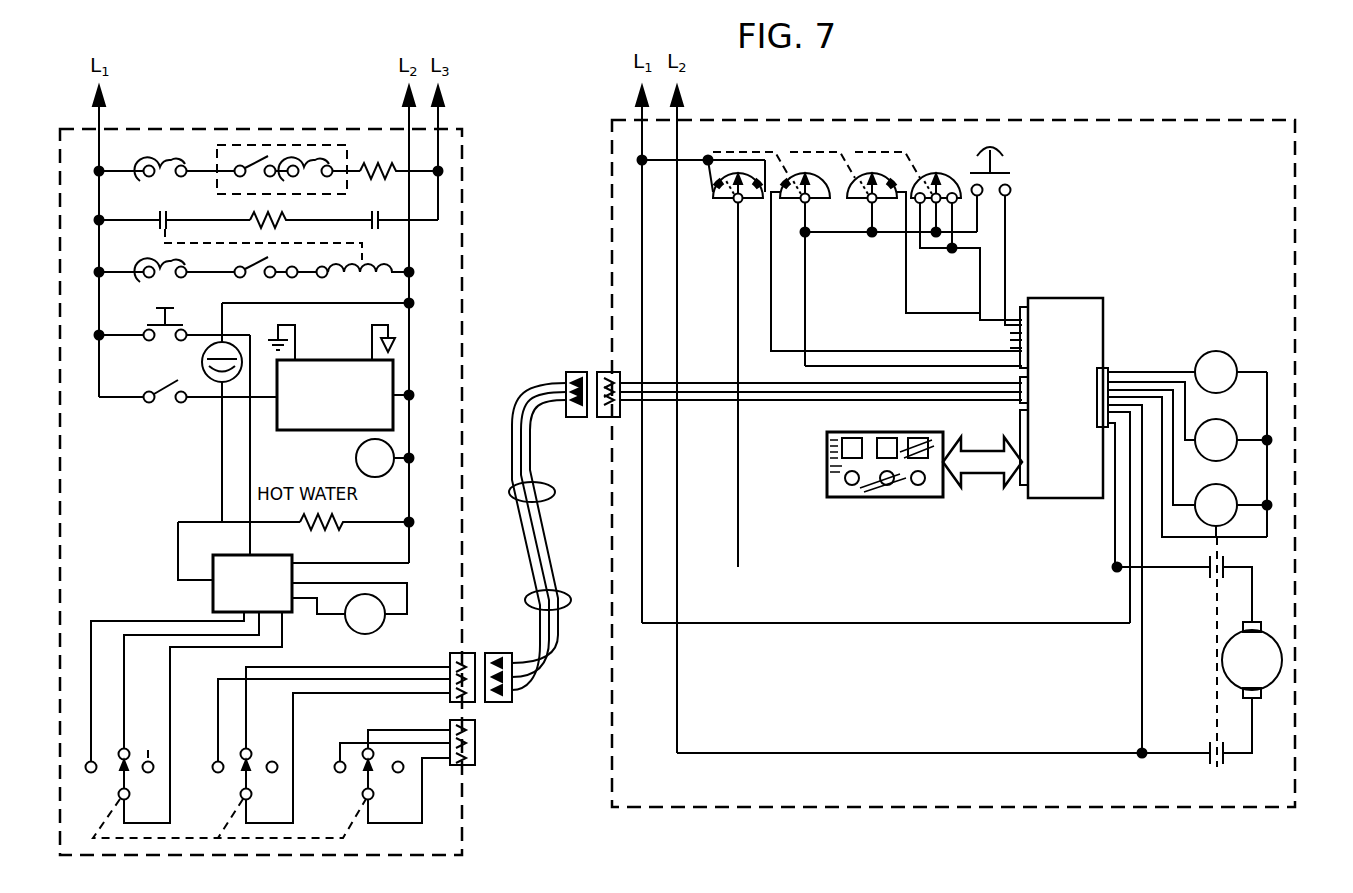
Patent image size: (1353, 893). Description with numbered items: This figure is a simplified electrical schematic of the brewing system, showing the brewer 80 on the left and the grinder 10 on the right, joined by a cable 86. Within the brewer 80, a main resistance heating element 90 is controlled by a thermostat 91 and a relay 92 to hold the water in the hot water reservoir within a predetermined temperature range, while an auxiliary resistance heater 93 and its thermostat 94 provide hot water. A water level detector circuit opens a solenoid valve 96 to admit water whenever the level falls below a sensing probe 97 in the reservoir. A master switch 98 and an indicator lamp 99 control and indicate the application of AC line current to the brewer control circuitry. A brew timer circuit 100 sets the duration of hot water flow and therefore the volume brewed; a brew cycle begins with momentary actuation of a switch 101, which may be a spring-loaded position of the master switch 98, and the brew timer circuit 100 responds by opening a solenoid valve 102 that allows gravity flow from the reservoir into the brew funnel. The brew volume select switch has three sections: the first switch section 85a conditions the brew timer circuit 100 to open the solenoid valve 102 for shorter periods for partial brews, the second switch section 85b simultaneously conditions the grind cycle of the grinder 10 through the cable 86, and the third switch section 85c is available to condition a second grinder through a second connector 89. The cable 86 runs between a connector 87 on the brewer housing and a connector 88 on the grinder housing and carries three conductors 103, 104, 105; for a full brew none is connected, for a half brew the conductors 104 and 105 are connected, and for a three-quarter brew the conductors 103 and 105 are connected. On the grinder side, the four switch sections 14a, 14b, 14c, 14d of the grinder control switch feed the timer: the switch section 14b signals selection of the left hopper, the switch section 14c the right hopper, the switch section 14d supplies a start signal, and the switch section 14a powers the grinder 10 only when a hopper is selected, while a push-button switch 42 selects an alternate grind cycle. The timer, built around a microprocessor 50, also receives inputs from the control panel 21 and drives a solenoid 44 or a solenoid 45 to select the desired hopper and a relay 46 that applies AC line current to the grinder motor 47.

The grinder 10 is at (1126, 120).
The switch section 14a is at (730, 204).
The switch section 14b is at (812, 178).
The switch section 14c is at (868, 204).
The switch section 14d is at (940, 180).
The control panel 21 is at (828, 480).
The push-button switch 42 is at (1006, 172).
The solenoid 44 is at (1216, 351).
The solenoid 45 is at (1232, 424).
The relay 46 is at (1232, 490).
The grinder motor 47 is at (1270, 632).
The microprocessor 50 is at (1060, 298).
The brewer 80 is at (462, 170).
The first switch section 85a is at (118, 780).
The second switch section 85b is at (240, 778).
The third switch section 85c is at (362, 778).
The cable 86 is at (526, 536).
The connector 87 is at (474, 653).
The connector 88 is at (606, 372).
The second connector 89 is at (476, 770).
The main resistance heating element 90 is at (287, 224).
The thermostat 91 is at (160, 264).
The relay 92 is at (372, 266).
The auxiliary resistance heater 93 is at (392, 146).
The thermostat 94 is at (165, 166).
The solenoid valve 96 is at (388, 472).
The sensing probe 97 is at (395, 350).
The master switch 98 is at (172, 392).
The indicator lamp 99 is at (201, 362).
The brew timer circuit 100 is at (292, 563).
The switch 101 is at (152, 324).
The solenoid valve 102 is at (380, 620).
The conductor 103 is at (510, 448).
The conductor 104 is at (527, 441).
The conductor 105 is at (534, 466).